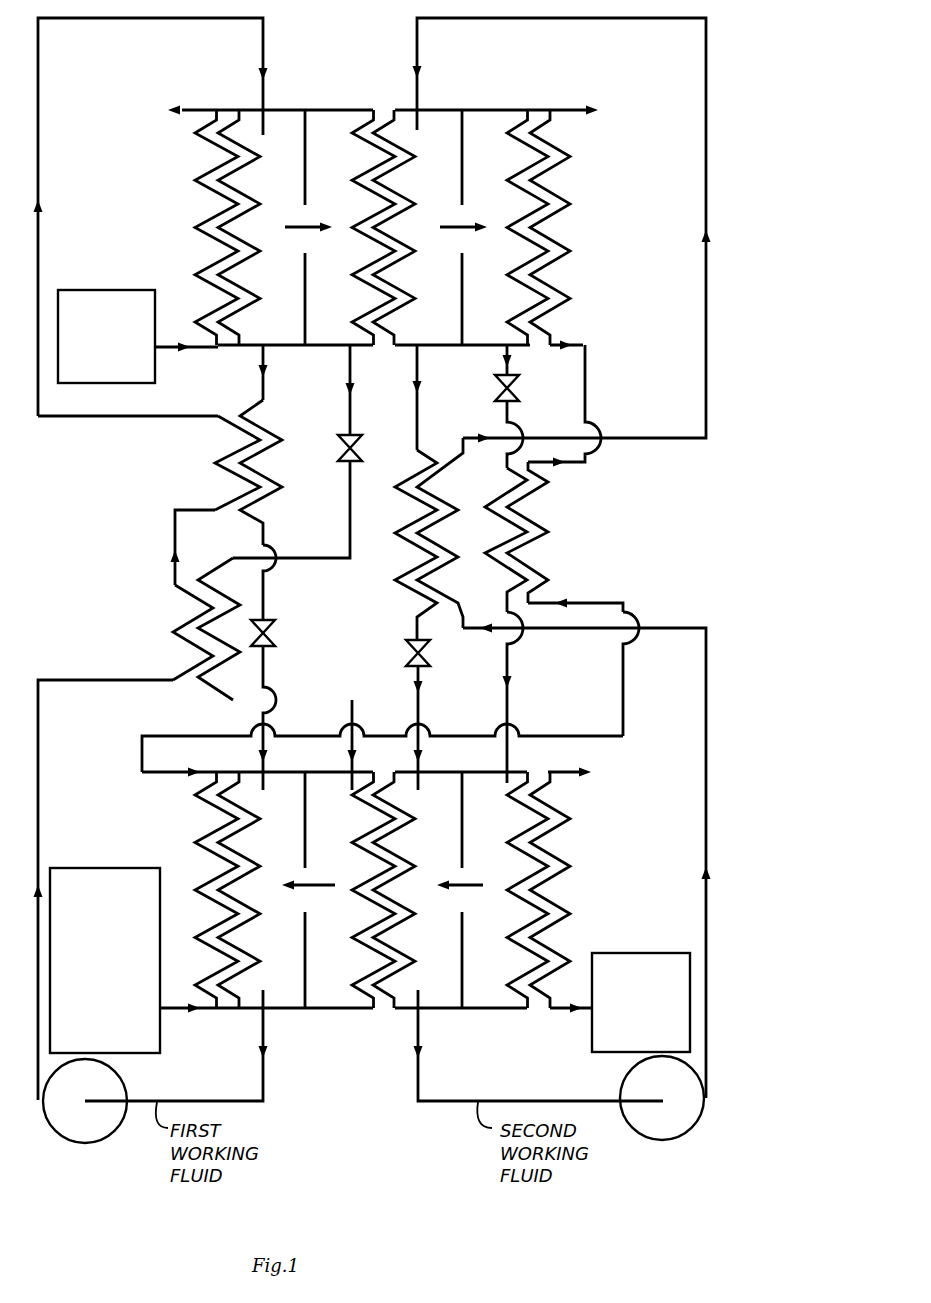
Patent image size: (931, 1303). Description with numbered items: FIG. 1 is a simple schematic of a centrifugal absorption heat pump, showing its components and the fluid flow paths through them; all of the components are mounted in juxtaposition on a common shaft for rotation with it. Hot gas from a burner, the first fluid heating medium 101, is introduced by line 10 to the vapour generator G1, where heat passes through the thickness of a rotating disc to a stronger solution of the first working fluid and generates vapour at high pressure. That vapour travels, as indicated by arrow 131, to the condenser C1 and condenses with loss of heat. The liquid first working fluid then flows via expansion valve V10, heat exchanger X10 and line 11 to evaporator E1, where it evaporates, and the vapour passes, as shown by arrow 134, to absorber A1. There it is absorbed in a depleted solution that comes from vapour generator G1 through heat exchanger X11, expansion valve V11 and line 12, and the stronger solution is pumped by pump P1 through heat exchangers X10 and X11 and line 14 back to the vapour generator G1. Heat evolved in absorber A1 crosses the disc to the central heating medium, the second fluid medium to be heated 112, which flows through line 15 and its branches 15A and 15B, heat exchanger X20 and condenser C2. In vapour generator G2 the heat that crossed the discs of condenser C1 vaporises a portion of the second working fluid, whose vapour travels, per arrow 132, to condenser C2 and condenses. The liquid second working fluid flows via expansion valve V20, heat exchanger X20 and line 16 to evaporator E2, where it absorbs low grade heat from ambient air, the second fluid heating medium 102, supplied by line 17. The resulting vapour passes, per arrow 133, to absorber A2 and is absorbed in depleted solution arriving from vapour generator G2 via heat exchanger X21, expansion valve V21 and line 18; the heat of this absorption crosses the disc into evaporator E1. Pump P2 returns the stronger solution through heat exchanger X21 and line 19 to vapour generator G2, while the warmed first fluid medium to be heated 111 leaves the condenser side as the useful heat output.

The line 10 is at (205, 350).
The line 11 is at (332, 562).
The line 12 is at (266, 668).
The line 14 is at (38, 258).
The line 15 is at (130, 752).
The manifold branch line 15A is at (139, 769).
The heated medium riser line 15B is at (585, 414).
The line 16 is at (509, 705).
The line 17 is at (563, 1011).
The line 18 is at (420, 707).
The line 19 is at (667, 439).
The first fluid heating medium source 101 is at (105, 289).
The second fluid heating medium source 102 is at (617, 953).
The first fluid medium to be heated outlet 111 is at (637, 349).
The second fluid medium to be heated (central heating medium) 112 is at (82, 868).
The heat flow arrow from G1 to C1 131 is at (300, 227).
The heat flow arrow from G2 to C2 132 is at (456, 228).
The heat flow arrow from E2 to A2 133 is at (483, 888).
The heat flow arrow from E1 to A1 134 is at (308, 884).
The vapour generator G1 is at (236, 227).
The condenser C1 is at (362, 227).
The vapour generator G2 is at (397, 227).
The condenser C2 is at (537, 227).
The absorber A1 is at (233, 890).
The evaporator E1 is at (363, 890).
The absorber A2 is at (398, 890).
The evaporator E2 is at (535, 890).
The heat exchanger X10 is at (195, 629).
The heat exchanger X11 is at (234, 472).
The heat exchanger X20 is at (530, 537).
The heat exchanger X21 is at (433, 539).
The expansion valve V10 is at (369, 448).
The expansion valve V11 is at (282, 633).
The expansion valve V20 is at (526, 388).
The expansion valve V21 is at (436, 653).
The pump P1 is at (85, 1101).
The pump P2 is at (662, 1098).